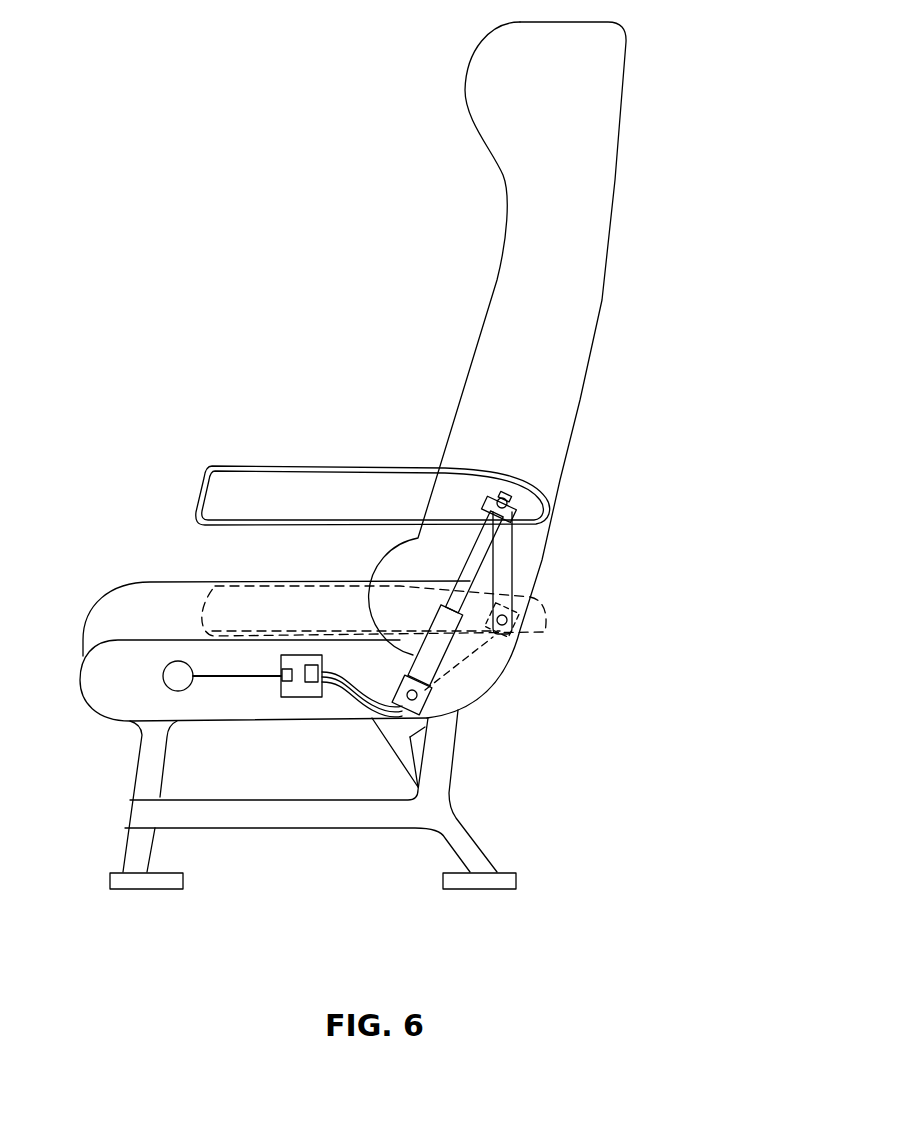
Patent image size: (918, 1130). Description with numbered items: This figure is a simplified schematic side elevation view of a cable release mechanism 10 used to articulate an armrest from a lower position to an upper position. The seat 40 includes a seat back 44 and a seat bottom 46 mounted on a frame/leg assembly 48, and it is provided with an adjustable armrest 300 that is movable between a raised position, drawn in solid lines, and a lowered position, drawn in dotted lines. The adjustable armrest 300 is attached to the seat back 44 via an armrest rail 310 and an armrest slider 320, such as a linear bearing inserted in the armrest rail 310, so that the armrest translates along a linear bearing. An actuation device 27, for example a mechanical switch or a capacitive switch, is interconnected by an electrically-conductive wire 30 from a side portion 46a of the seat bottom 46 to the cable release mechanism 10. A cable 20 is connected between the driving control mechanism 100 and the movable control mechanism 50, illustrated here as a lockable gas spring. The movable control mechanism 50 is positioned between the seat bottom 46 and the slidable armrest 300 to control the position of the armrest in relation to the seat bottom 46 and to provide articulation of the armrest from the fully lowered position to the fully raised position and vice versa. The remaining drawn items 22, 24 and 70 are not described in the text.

The cable release mechanism 10 is at (304, 713).
The cable 20 is at (404, 713).
The cables 22 is at (370, 720).
The connector 24 is at (282, 690).
The actuation device 27 is at (176, 661).
The electrically-conductive wire 30 is at (228, 675).
The seat 40 is at (254, 260).
The seat back 44 is at (597, 185).
The seat bottom 46 is at (138, 583).
The side portion 46a is at (162, 633).
The frame/leg assembly 48 is at (133, 775).
The movable control mechanism 50 is at (348, 622).
The base frame 70 is at (200, 722).
The driving control mechanism 100 is at (300, 670).
The adjustable armrest 300 is at (362, 468).
The armrest rail 310 is at (512, 567).
The armrest slider 320 is at (500, 494).